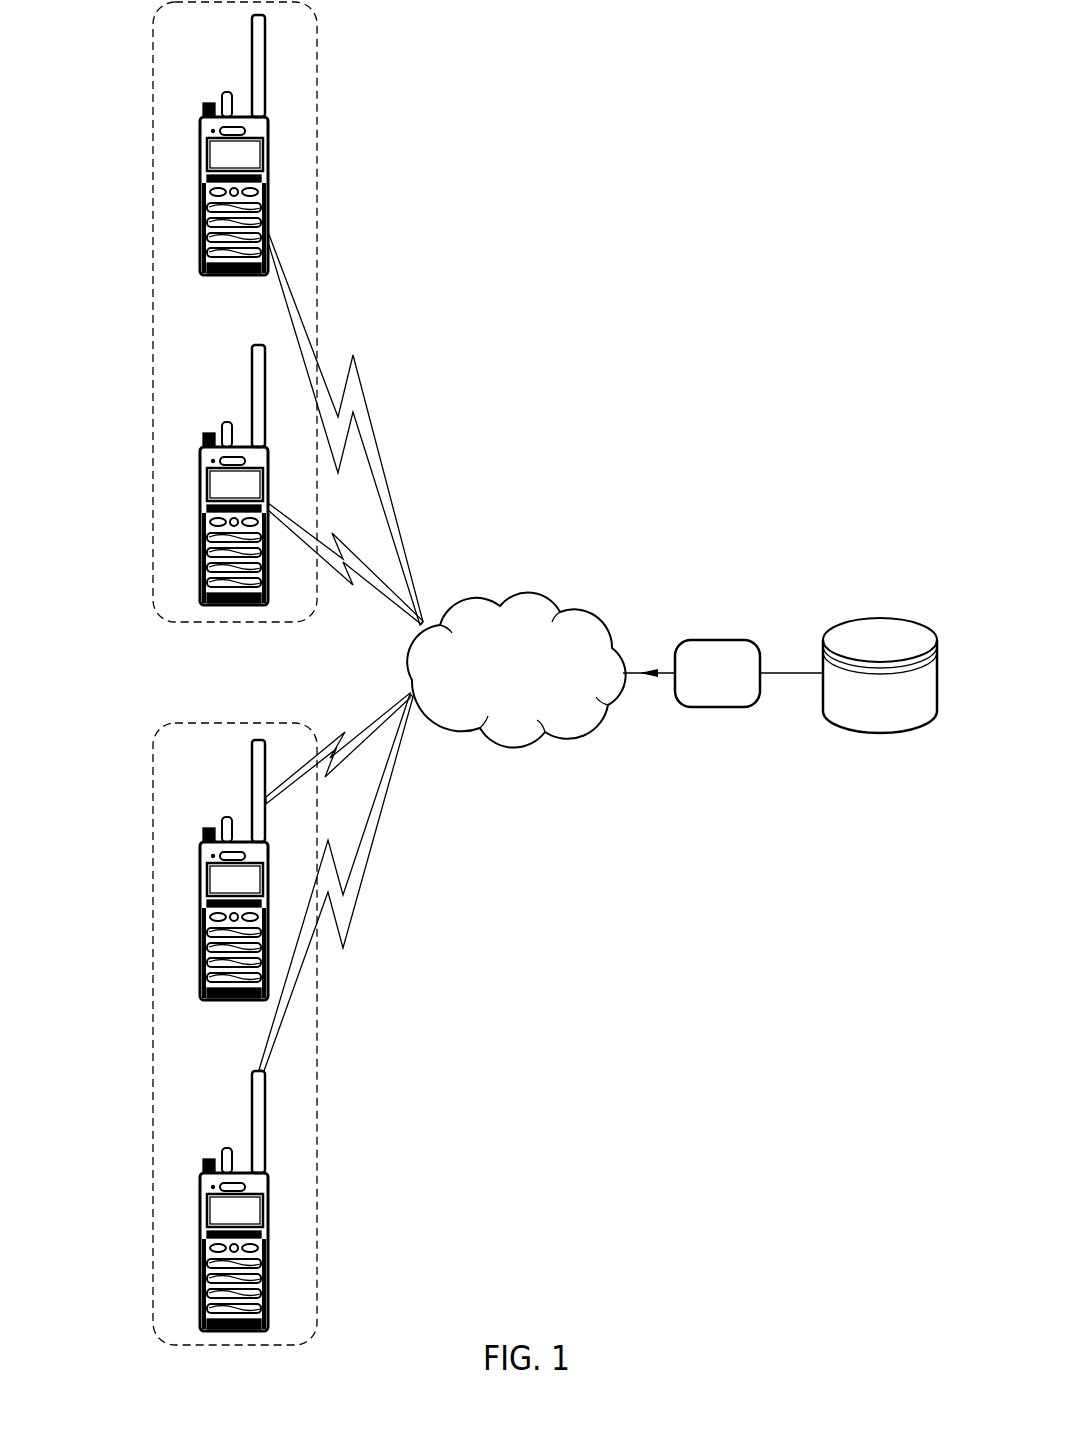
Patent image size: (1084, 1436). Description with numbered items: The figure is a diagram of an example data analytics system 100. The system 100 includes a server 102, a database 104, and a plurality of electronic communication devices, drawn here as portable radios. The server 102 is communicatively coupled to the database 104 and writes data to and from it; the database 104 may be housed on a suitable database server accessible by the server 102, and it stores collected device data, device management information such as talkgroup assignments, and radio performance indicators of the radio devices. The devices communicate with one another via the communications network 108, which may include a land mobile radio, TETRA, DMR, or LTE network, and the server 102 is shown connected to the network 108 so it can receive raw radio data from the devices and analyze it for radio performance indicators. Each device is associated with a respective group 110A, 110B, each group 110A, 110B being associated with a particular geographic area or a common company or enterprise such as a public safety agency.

The data analytics system 100 is at (828, 322).
The server 102 is at (717, 640).
The database 104 is at (880, 617).
The communications network 108 is at (498, 604).
The group 110A is at (153, 42).
The group 110B is at (153, 767).